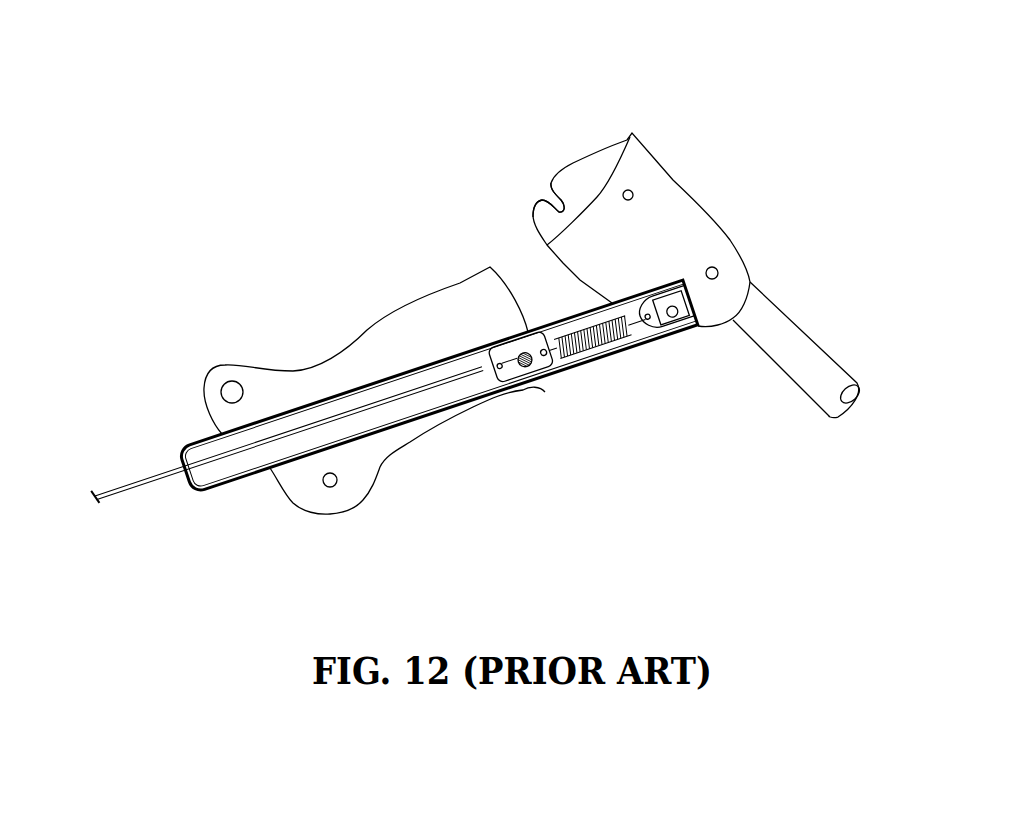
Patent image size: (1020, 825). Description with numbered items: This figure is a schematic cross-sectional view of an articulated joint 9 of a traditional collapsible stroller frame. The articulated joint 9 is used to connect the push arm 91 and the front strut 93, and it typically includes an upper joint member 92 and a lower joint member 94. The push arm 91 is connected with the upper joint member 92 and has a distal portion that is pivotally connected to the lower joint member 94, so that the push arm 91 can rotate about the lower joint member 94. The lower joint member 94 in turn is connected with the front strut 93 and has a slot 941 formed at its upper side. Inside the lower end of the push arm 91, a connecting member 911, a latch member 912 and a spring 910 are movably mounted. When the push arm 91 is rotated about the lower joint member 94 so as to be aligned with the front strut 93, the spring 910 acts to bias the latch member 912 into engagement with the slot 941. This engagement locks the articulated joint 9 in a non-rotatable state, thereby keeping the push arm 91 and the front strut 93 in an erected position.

The articulated joint 9 is at (330, 160).
The push arm 91 is at (375, 430).
The connecting member 911 is at (287, 432).
The latch member 912 is at (521, 357).
The spring 910 is at (597, 335).
The upper joint member 92 is at (440, 298).
The front strut 93 is at (785, 337).
The lower joint member 94 is at (599, 218).
The slot 941 is at (563, 207).